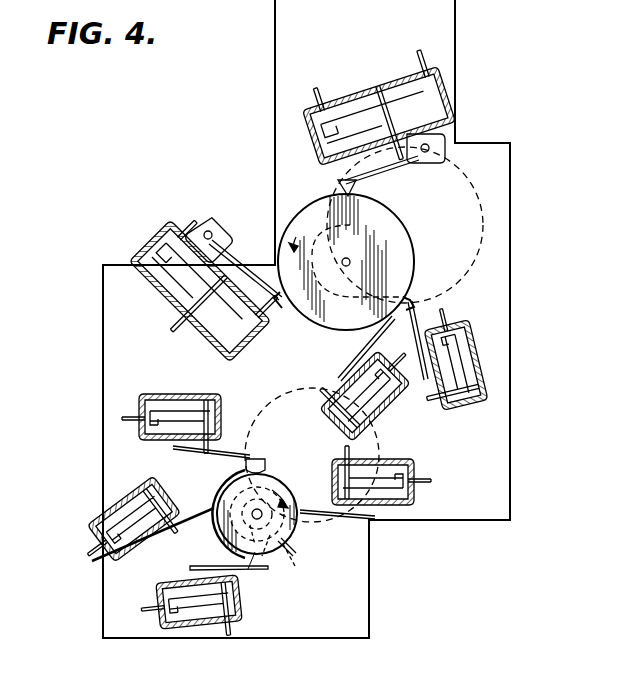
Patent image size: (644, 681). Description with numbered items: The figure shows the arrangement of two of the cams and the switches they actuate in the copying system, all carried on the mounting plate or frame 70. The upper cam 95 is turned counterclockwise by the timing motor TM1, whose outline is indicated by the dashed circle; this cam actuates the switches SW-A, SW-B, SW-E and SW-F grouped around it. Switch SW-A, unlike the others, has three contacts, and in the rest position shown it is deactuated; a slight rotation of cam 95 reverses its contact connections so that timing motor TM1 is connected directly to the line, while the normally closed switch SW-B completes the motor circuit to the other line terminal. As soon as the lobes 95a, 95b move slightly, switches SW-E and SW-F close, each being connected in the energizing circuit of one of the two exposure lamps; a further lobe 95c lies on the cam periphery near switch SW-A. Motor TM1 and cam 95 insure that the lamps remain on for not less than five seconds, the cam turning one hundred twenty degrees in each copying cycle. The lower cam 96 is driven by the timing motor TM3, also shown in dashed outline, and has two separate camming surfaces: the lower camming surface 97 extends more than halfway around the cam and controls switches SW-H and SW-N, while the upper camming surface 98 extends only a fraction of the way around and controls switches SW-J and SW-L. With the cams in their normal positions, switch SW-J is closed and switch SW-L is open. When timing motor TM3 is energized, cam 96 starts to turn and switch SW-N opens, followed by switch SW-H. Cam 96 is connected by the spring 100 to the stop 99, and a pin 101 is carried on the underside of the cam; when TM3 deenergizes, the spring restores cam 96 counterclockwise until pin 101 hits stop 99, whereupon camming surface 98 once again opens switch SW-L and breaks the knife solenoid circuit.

The casing / frame 70 is at (516, 158).
The cam 95 is at (402, 246).
The lobe 95a is at (338, 184).
The lobe 95b is at (282, 308).
The cam follower / notch 95c is at (412, 300).
The cam 96 is at (266, 480).
The lower camming surface 97 is at (216, 540).
The upper camming surface 98 is at (252, 570).
The stop 99 is at (298, 553).
The spring 100 is at (251, 475).
The pin 101 is at (290, 555).
The switch SW-F is at (384, 74).
The switch SW-E is at (172, 225).
The switch SW-A is at (490, 397).
The switch SW-B is at (330, 398).
The switch SW-N is at (400, 506).
The switch SW-H is at (150, 394).
The switch SW-J is at (92, 518).
The switch SW-L is at (170, 630).
The timing motor TM1 is at (490, 232).
The timing motor TM3 is at (272, 418).